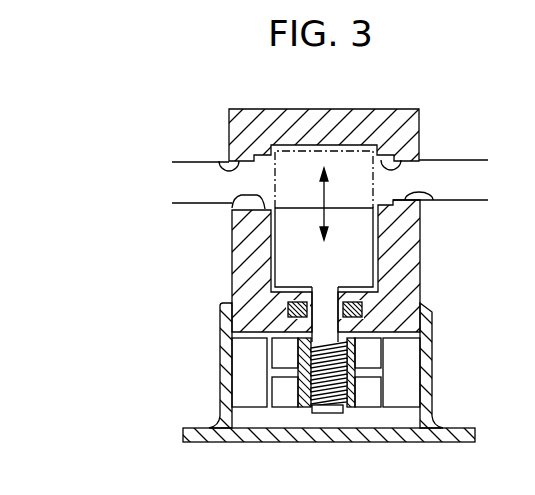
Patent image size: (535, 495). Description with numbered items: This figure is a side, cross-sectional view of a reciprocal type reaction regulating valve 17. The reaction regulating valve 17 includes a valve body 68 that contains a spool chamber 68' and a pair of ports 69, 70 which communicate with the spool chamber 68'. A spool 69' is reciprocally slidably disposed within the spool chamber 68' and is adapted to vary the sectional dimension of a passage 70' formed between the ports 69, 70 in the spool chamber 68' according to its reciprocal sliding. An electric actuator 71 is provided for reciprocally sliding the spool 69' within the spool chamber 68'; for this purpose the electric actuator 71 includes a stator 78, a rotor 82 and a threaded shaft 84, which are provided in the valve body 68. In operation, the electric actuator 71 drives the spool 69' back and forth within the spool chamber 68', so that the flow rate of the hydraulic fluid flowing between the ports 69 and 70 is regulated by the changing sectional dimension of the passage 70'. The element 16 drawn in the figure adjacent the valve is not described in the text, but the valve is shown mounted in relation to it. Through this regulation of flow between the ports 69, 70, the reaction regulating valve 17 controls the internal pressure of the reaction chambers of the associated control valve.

The support panel 16 is at (172, 203).
The reaction regulating valve 17 is at (53, 148).
The valve body 68 is at (324, 112).
The spool chamber 68' is at (403, 266).
The port 69 is at (212, 147).
The spool 69' is at (275, 241).
The port 70 is at (431, 217).
The passage 70' is at (326, 181).
The electric actuator 71 is at (396, 378).
The stator 78 is at (247, 408).
The rotor 82 is at (282, 408).
The threaded shaft 84 is at (331, 413).